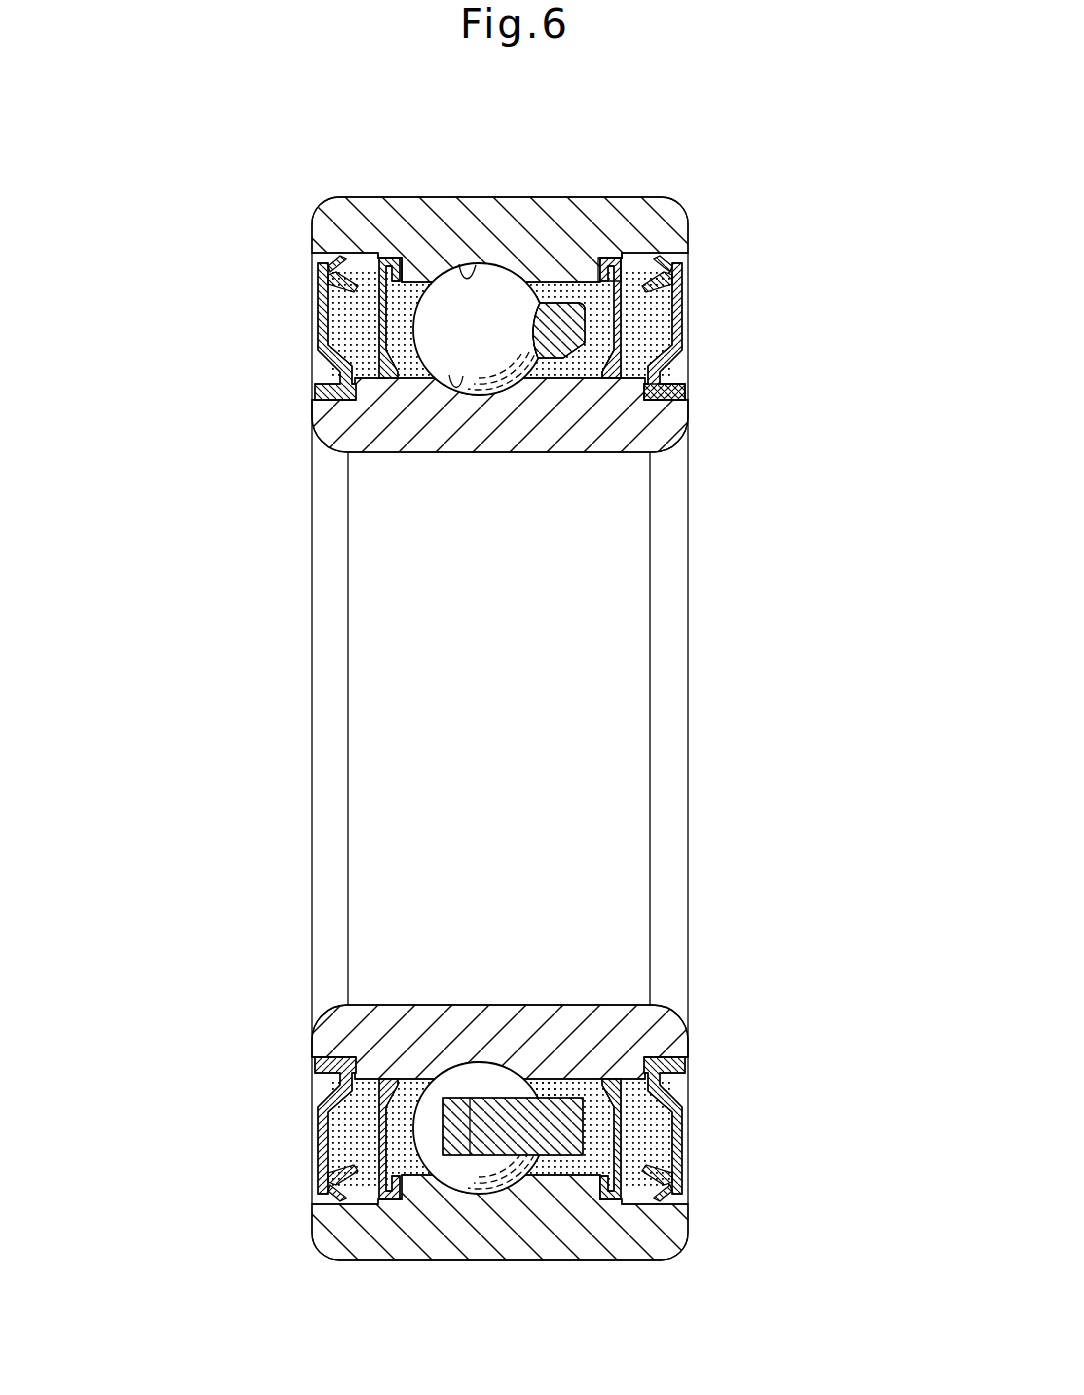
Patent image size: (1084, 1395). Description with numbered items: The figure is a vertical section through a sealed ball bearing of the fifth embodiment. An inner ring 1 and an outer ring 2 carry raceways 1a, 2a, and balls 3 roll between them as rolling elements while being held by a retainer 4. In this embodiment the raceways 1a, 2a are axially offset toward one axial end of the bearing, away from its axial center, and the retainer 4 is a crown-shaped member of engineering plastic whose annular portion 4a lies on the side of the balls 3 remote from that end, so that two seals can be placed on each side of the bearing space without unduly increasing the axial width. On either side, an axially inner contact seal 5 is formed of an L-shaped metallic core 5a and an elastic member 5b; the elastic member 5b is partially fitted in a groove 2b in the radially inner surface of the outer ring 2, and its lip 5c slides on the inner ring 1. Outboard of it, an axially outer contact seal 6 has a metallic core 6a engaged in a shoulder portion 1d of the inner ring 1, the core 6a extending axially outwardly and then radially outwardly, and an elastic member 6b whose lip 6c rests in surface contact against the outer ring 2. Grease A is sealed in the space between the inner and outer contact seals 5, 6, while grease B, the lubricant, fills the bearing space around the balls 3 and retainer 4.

The inner ring 1 is at (388, 443).
The raceway 1a is at (450, 392).
The shoulder portion 1d is at (310, 403).
The outer ring 2 is at (441, 205).
The raceway 2a is at (470, 272).
The groove 2b is at (372, 255).
The balls 3 is at (500, 290).
The retainer 4 is at (554, 300).
The annular portion 4a is at (575, 322).
The axially inner contact seal 5 is at (366, 327).
The metallic core 5a is at (600, 378).
The elastic member 5b is at (615, 264).
The lip 5c is at (612, 368).
The axially outer contact seal 6 is at (306, 343).
The metallic core 6a is at (662, 368).
The elastic member 6b is at (668, 276).
The lip 6c is at (660, 262).
The grease A is at (362, 1097).
The grease B is at (598, 1090).